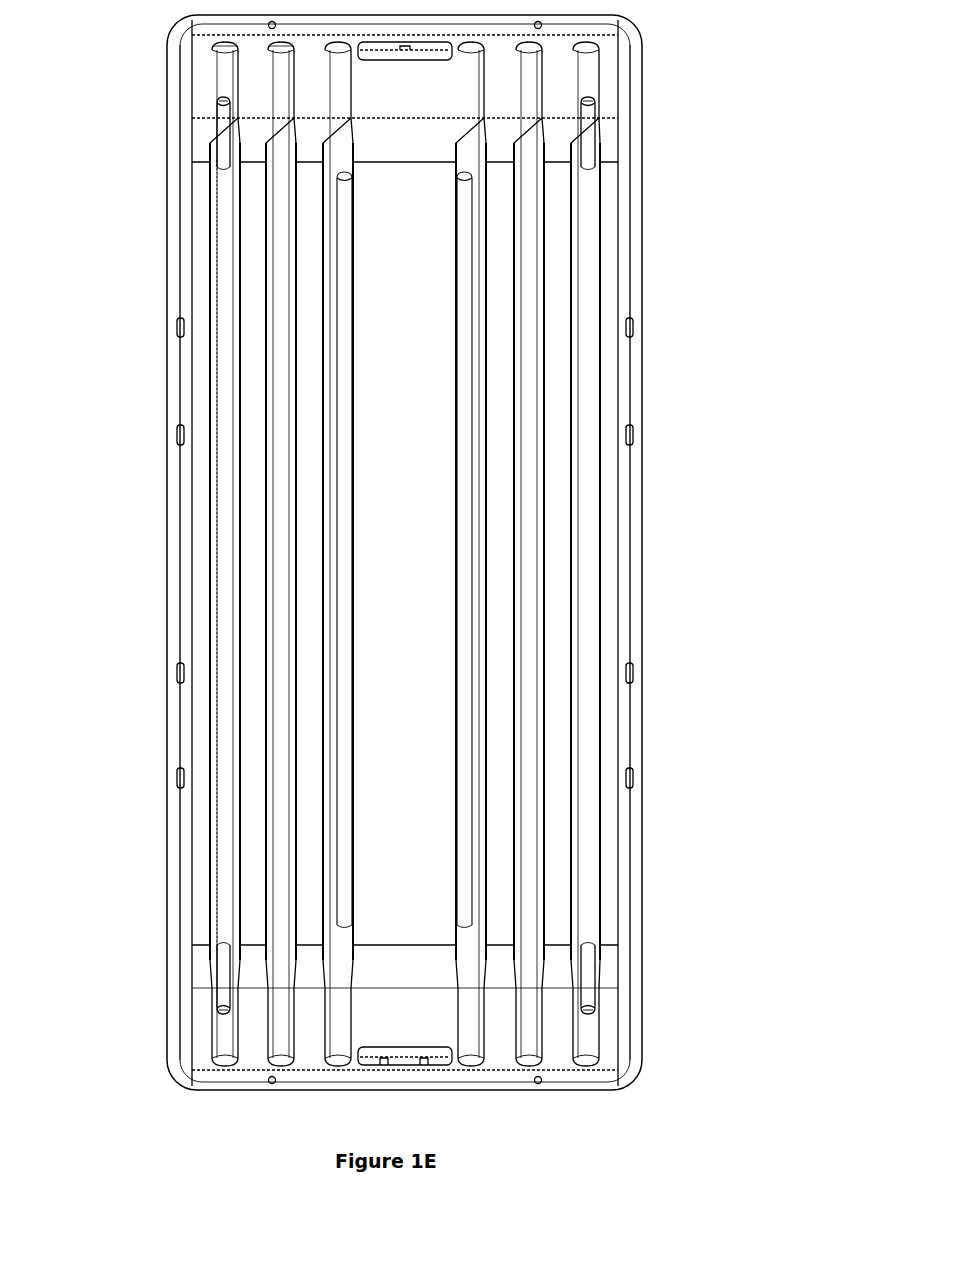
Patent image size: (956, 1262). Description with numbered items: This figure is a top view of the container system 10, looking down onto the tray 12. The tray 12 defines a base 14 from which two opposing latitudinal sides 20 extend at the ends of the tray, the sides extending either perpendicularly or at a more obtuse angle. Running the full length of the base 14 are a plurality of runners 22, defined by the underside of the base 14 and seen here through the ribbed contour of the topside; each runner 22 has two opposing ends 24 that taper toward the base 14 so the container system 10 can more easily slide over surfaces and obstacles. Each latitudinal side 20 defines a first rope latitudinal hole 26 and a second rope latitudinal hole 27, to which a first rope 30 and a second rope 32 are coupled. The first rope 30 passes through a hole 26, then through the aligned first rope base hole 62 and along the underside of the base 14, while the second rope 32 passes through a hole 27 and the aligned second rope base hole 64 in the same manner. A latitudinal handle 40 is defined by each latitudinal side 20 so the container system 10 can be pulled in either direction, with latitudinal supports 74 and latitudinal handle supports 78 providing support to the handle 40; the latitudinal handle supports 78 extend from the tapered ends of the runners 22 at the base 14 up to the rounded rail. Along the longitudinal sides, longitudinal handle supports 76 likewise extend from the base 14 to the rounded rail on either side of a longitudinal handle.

The container system 10 is at (770, 609).
The tray 12 is at (648, 738).
The base 14 is at (405, 553).
The latitudinal sides 20 is at (405, 72).
The runners 22 is at (557, 250).
The opposing ends 24 is at (310, 98).
The first rope latitudinal hole 26 is at (225, 97).
The second rope latitudinal hole 27 is at (583, 95).
The first rope 30 is at (223, 130).
The second rope 32 is at (590, 130).
The latitudinal handle 40 is at (393, 1048).
The first rope base hole 62 is at (227, 163).
The second rope base hole 64 is at (583, 165).
The latitudinal supports 74 is at (278, 497).
The longitudinal handle supports 76 is at (634, 327).
The latitudinal handle supports 78 is at (338, 75).